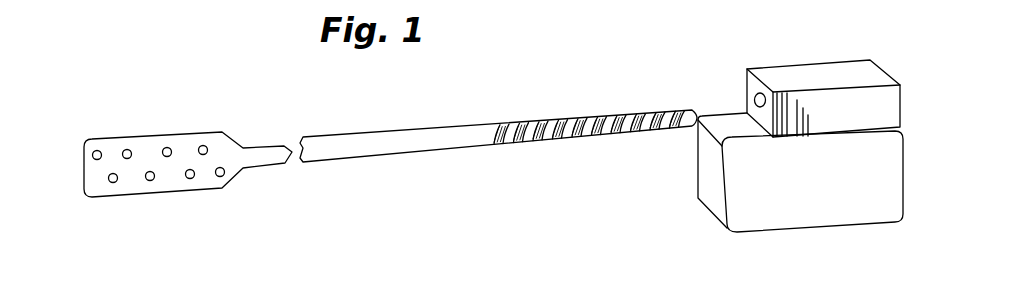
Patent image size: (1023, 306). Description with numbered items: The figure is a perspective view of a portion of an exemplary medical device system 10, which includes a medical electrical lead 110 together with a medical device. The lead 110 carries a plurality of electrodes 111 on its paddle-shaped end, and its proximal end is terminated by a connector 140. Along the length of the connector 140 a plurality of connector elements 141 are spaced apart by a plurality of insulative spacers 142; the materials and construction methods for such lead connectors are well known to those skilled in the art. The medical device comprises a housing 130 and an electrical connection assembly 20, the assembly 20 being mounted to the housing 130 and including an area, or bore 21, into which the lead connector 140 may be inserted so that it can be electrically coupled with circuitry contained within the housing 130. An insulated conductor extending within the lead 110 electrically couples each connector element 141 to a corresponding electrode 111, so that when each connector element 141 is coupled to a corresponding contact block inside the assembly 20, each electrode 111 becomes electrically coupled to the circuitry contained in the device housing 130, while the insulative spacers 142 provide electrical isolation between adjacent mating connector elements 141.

The medical device system 10 is at (694, 209).
The electrical connection assembly 20 is at (871, 71).
The bore 21 is at (754, 98).
The medical electrical lead 110 is at (398, 112).
The electrode 111 is at (203, 145).
The housing 130 is at (893, 194).
The connector 140 is at (680, 56).
The connector elements 141 is at (575, 141).
The insulative spacers 142 is at (595, 118).